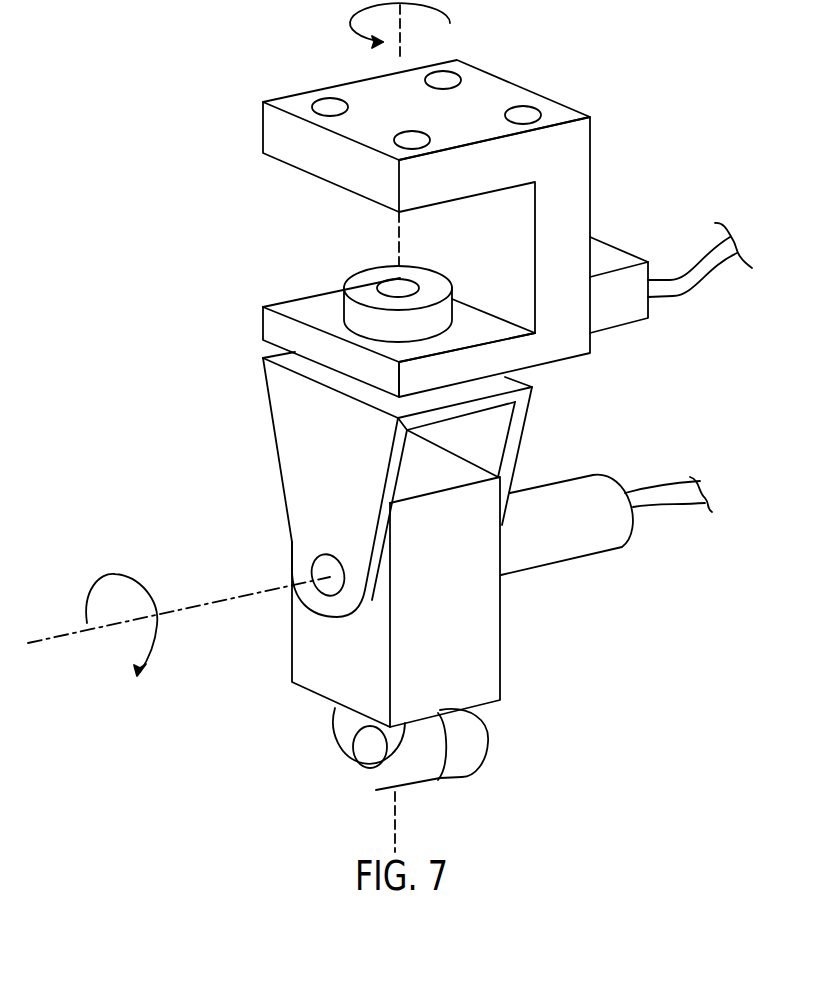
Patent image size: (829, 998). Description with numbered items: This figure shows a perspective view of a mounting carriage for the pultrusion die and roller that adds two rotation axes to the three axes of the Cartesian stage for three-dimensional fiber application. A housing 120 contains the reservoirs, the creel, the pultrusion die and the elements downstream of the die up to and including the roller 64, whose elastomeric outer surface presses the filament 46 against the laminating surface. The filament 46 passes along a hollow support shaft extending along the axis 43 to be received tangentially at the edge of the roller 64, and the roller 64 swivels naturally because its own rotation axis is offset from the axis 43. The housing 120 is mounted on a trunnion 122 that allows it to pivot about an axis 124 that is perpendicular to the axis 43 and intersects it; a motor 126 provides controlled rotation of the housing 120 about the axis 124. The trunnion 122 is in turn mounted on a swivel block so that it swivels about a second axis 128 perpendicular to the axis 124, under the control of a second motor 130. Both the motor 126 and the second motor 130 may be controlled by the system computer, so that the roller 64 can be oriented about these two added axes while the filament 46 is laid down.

The axis 43 is at (393, 820).
The filament 46 is at (449, 752).
The roller 64 is at (470, 742).
The housing 120 is at (480, 660).
The trunnion 122 is at (285, 423).
The axis 124 is at (88, 633).
The motor 126 is at (557, 562).
The second axis 128 is at (402, 30).
The second motor 130 is at (618, 317).